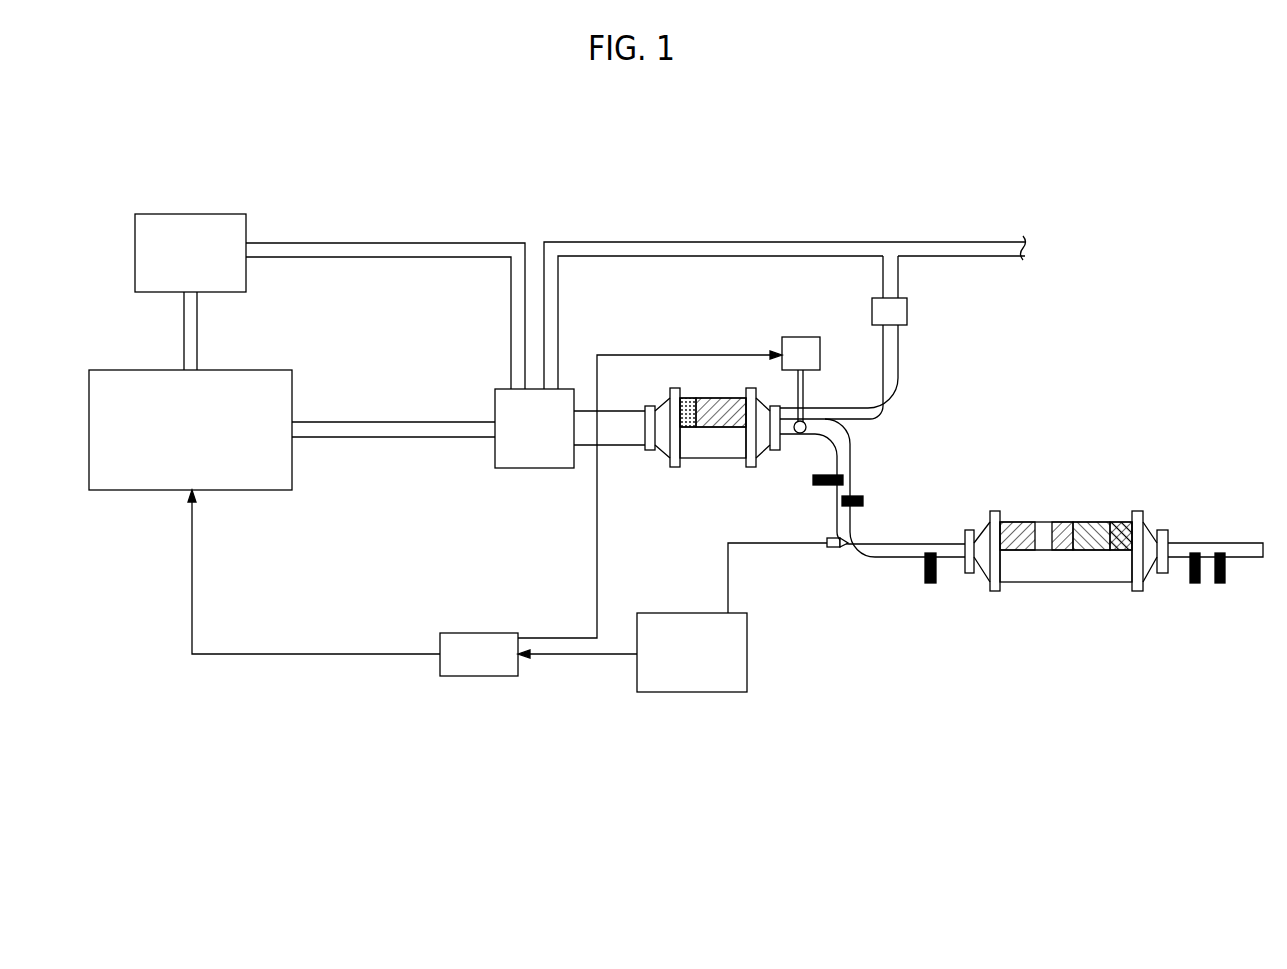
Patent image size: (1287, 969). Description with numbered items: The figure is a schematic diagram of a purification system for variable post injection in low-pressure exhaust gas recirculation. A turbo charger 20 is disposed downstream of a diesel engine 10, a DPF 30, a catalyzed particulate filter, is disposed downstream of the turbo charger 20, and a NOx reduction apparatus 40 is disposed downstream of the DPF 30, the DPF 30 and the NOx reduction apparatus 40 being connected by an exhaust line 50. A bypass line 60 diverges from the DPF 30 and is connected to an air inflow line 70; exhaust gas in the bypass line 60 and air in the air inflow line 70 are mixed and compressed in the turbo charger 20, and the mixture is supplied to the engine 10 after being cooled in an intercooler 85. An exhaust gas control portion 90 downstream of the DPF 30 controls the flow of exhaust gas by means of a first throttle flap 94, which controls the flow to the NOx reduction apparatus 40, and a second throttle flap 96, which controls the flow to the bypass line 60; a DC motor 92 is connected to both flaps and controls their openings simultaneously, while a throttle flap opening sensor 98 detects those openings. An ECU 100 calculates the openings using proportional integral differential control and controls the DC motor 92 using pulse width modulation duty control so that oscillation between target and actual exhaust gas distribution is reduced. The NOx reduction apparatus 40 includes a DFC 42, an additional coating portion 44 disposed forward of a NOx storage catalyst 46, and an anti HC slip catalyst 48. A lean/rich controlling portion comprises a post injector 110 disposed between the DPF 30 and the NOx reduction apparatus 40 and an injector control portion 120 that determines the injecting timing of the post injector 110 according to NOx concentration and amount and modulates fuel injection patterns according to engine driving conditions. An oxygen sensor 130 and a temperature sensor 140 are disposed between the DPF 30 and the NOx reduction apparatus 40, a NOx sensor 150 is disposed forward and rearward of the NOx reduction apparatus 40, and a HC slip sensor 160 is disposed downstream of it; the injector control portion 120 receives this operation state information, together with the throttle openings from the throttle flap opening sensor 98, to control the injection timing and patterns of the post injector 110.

The diesel engine 10 is at (249, 490).
The turbo charger 20 is at (527, 468).
The DPF (catalyzed particulate filter) 30 is at (706, 484).
The NOx reduction apparatus 40 is at (1114, 548).
The DFC (Diesel Fuel Cracking catalyst) 42 is at (1013, 522).
The additional coating portion 44 is at (1060, 522).
The NOx storage catalyst 46 is at (1087, 522).
The anti HC slip catalyst 48 is at (1121, 522).
The exhaust line 50 is at (849, 433).
The bypass line 60 is at (897, 355).
The air inflow line 70 is at (942, 250).
The intercooler 85 is at (187, 214).
The exhaust gas control portion 90 is at (856, 338).
The DC motor 92 is at (810, 337).
The first throttle flap 94 is at (800, 434).
The second throttle flap 96 is at (818, 404).
The throttle flap opening sensor 98 is at (800, 415).
The ECU 100 is at (480, 676).
The post injector 110 is at (790, 543).
The injector control portion 120 is at (697, 692).
The oxygen sensor 130 is at (813, 485).
The temperature sensor 140 is at (863, 500).
The NOx sensor 150 is at (932, 583).
The HC slip sensor 160 is at (1220, 583).